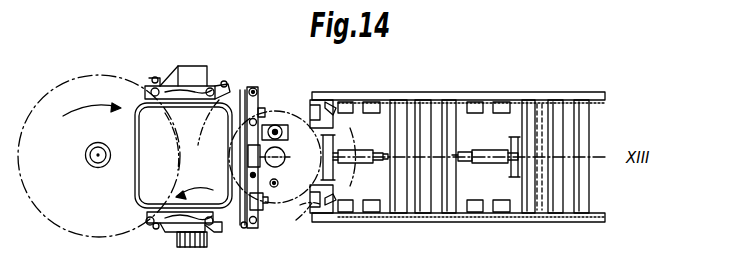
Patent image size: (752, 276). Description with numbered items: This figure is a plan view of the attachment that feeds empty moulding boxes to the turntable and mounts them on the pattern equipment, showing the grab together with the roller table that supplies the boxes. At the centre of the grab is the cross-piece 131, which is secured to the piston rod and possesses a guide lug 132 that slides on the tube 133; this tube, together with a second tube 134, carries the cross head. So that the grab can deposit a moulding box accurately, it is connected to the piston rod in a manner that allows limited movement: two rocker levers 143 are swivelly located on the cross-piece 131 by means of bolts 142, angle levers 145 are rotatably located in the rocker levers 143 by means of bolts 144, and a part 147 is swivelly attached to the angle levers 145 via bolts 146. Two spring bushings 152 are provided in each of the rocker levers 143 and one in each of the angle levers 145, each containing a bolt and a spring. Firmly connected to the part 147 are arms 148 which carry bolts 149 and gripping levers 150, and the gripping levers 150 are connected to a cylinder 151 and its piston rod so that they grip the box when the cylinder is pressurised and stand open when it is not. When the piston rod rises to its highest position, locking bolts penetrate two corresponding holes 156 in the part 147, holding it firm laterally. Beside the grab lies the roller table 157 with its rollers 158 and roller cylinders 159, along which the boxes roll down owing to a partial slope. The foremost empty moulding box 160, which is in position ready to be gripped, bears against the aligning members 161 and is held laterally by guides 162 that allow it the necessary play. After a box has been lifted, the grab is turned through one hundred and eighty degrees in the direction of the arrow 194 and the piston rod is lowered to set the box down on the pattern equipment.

The cross-piece 131 is at (255, 177).
The guide lug 132 is at (288, 157).
The tube 133 is at (277, 125).
The second tube 134 is at (278, 186).
The bolts 142 is at (263, 195).
The rocker levers 143 is at (262, 101).
The bolts 144 is at (254, 86).
The angle levers 145 is at (246, 229).
The bolts 146 is at (232, 228).
The part 147 is at (253, 225).
The arms 148 is at (176, 238).
The bolts 149 is at (147, 224).
The gripping levers 150 is at (153, 230).
The cylinder 151 is at (190, 246).
The spring bushings 152 is at (300, 215).
The holes 156 is at (239, 184).
The roller table 157 is at (411, 93).
The rollers 158 is at (498, 102).
The roller cylinders 159 is at (593, 126).
The moulding box 160 is at (359, 106).
The aligning members 161 is at (330, 212).
The guides 162 is at (325, 103).
The arrow 194 is at (293, 114).